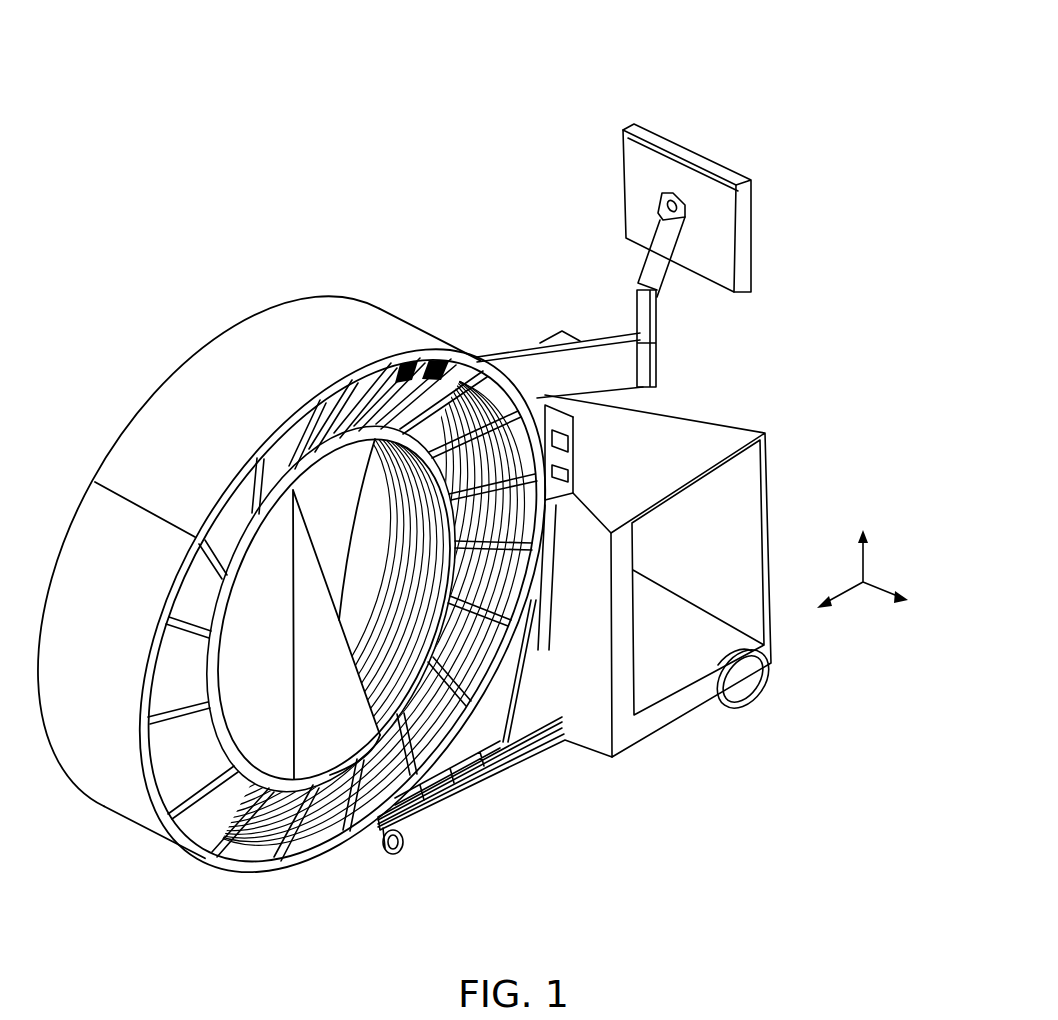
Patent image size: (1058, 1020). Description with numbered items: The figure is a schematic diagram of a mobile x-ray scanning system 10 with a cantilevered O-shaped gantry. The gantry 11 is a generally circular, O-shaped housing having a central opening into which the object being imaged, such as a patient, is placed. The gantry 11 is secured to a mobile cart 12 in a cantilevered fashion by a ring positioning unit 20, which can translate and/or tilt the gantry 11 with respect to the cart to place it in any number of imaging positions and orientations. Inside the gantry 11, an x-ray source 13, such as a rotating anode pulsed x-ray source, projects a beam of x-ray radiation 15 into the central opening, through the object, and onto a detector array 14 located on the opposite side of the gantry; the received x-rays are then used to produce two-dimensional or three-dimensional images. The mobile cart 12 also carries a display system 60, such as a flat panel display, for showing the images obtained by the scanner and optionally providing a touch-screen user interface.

The x-ray scanning system 10 is at (180, 74).
The gantry 11 is at (244, 330).
The mobile cart 12 is at (703, 410).
The x-ray source 13 is at (320, 405).
The detector array 14 is at (257, 825).
The beam of x-ray radiation 15 is at (304, 594).
The ring positioning unit 20 is at (488, 760).
The display system 60 is at (640, 187).